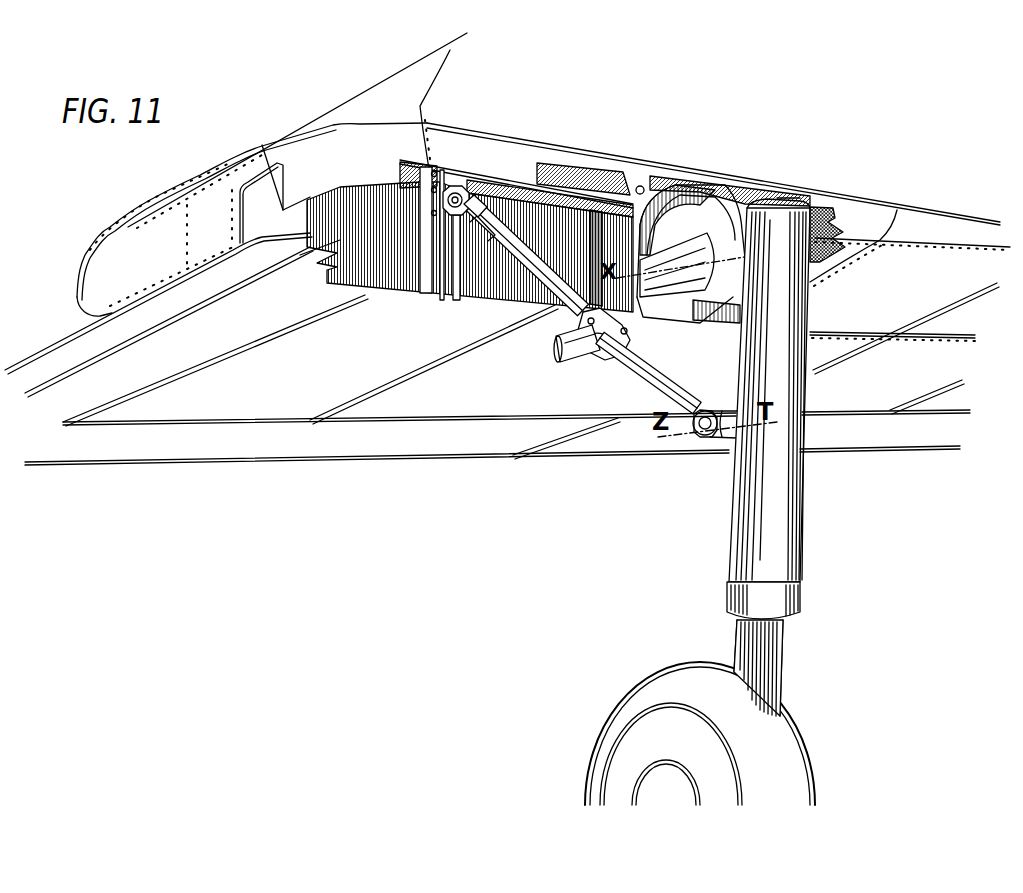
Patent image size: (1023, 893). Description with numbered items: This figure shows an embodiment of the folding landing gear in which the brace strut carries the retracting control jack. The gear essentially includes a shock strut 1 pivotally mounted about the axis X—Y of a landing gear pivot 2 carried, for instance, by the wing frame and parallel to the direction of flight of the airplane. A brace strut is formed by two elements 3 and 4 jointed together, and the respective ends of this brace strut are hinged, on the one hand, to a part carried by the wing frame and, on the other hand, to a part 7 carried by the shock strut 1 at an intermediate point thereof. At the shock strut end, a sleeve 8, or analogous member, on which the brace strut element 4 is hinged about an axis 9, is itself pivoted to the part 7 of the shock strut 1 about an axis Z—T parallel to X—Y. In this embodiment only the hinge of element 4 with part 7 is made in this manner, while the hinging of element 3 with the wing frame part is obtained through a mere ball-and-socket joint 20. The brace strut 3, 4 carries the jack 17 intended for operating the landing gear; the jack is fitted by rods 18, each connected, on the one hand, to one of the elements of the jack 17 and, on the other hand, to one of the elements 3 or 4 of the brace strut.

The shock strut 1 is at (793, 487).
The landing gear pivot 2 is at (673, 248).
The brace strut element 3 is at (540, 276).
The brace strut element 4 is at (642, 372).
The part carried by the shock strut 7 is at (727, 443).
The sleeve 8 is at (708, 442).
The hinge axis 9 is at (710, 403).
The jack 17 is at (558, 363).
The rods 18 is at (562, 336).
The ball-and-socket joint 20 is at (465, 195).